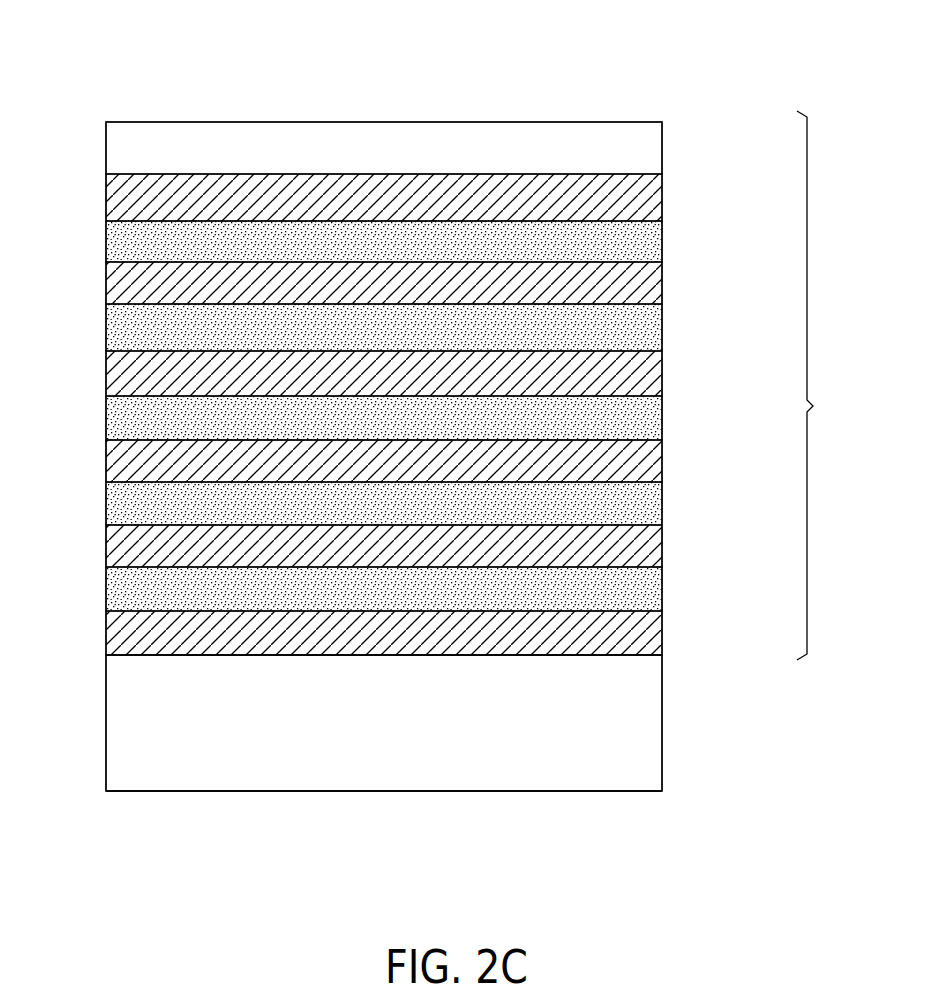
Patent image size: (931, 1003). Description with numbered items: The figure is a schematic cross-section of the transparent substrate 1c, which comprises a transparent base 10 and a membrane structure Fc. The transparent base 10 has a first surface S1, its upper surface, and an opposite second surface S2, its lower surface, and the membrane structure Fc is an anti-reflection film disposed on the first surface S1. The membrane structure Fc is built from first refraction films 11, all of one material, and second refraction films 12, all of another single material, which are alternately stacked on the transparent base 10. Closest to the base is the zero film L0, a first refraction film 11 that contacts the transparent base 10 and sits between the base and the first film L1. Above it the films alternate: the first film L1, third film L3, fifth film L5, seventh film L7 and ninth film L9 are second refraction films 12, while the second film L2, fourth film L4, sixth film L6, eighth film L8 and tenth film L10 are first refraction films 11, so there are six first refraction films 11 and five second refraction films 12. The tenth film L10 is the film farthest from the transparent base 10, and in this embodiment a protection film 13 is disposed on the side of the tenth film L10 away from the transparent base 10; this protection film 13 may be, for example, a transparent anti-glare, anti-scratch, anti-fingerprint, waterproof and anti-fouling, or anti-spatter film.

The transparent substrate 1c is at (226, 49).
The protection film 13 is at (642, 148).
The tenth film L10 is at (648, 198).
The ninth film L9 is at (648, 237).
The eighth film L8 is at (648, 281).
The seventh film L7 is at (648, 326).
The sixth film L6 is at (648, 372).
The fifth film L5 is at (648, 417).
The fourth film L4 is at (648, 460).
The third film L3 is at (648, 503).
The second film L2 is at (648, 542).
The first film L1 is at (648, 587).
The zero film L0 is at (648, 632).
The first refraction film 11 is at (449, 414).
The second refraction film 12 is at (442, 416).
The transparent base 10 is at (648, 727).
The first surface S1 is at (137, 655).
The second surface S2 is at (142, 792).
The membrane structure Fc is at (822, 385).